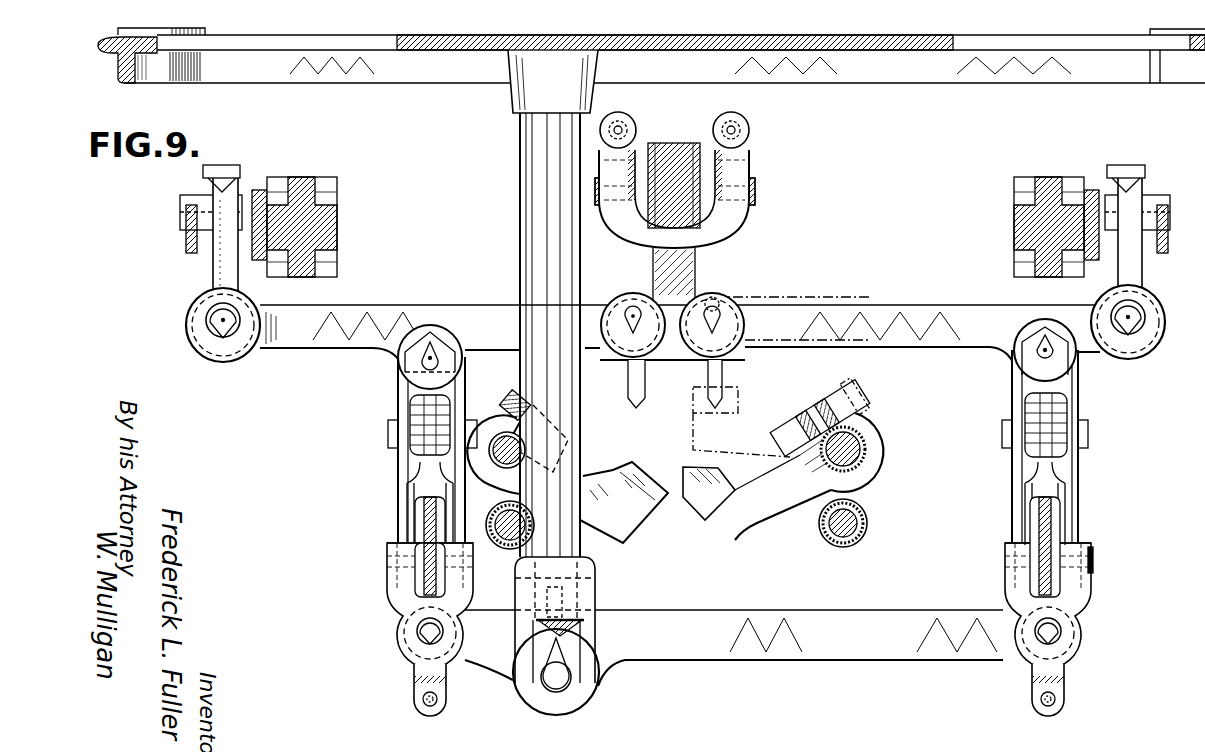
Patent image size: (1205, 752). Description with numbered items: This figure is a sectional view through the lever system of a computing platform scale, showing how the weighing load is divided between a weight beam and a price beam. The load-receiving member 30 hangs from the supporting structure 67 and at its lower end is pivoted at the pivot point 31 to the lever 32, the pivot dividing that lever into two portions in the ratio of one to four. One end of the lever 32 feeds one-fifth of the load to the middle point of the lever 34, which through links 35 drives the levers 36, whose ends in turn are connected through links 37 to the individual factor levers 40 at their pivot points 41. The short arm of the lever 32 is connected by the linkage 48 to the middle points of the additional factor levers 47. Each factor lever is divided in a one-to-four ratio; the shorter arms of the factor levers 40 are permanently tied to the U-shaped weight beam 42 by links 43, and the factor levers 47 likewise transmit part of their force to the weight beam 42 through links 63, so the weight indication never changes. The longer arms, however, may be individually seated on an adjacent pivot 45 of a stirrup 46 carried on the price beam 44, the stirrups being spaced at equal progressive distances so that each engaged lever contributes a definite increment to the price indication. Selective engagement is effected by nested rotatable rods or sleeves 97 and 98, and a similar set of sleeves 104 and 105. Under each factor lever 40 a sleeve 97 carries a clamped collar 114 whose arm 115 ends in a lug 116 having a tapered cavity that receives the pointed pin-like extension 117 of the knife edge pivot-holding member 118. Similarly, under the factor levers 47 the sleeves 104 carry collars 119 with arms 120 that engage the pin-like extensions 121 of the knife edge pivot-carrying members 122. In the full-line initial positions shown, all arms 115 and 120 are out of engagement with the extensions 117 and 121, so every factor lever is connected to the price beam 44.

The member 30 is at (538, 185).
The pivot point 31 is at (545, 680).
The lever 32 is at (695, 652).
The lever 34 is at (1051, 523).
The links 35 is at (1075, 493).
The levers 36 is at (1045, 400).
The links 37 is at (1073, 385).
The factor levers 40 is at (928, 310).
The pivot points 41 is at (1033, 347).
The weight beam 42 is at (300, 183).
The links 43 is at (1137, 265).
The price beam 44 is at (673, 147).
The pivots 45 is at (623, 340).
The stirrups 46 is at (720, 226).
The factor levers 47 is at (435, 312).
The linkage 48 is at (378, 575).
The links 63 is at (223, 270).
The supporting structure 67 is at (790, 72).
The nested rods or sleeves 97 is at (868, 458).
The nested rods or sleeves 98 is at (871, 540).
The nested sleeves or rods 104 is at (523, 453).
The nested sleeves or rods 105 is at (533, 537).
The collar 114 is at (875, 447).
The arm 115 is at (782, 505).
The lug 116 is at (700, 488).
The pin-like extension 117 is at (722, 375).
The knife edge pivot-holding member 118 is at (727, 310).
The collars 119 is at (480, 430).
The arms 120 is at (593, 493).
The pin-like extensions 121 is at (638, 382).
The knife edge pivot-carrying members 122 is at (633, 303).